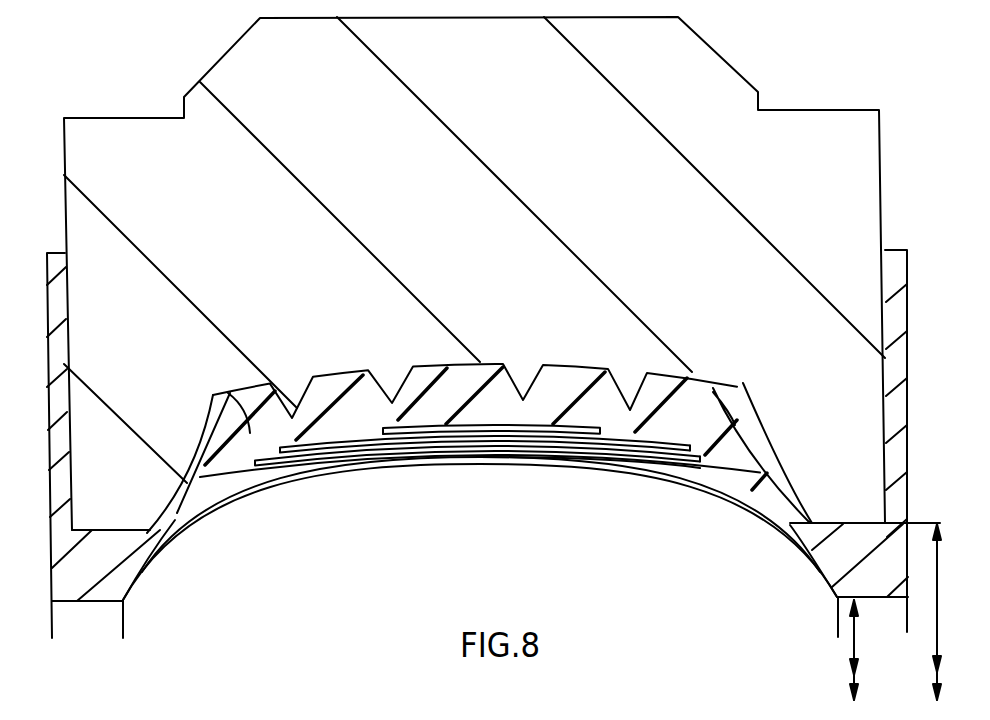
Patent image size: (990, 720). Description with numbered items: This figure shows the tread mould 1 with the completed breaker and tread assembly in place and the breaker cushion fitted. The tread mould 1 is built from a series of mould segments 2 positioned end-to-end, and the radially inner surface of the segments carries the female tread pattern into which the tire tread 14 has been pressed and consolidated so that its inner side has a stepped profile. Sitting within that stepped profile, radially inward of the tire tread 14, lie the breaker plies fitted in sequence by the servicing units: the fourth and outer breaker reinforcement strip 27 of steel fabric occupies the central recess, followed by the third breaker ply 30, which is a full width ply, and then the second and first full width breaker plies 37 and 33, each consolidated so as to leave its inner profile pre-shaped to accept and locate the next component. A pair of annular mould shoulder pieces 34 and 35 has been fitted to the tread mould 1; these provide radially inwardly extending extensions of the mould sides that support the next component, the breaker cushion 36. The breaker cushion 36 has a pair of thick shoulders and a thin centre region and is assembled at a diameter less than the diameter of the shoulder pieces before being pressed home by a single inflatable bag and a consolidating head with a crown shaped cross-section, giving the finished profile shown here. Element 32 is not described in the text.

The tread mould 1 is at (822, 282).
The mould segments 2 is at (147, 492).
The tire tread 14 is at (688, 435).
The fourth and outer breaker reinforcement strip 27 is at (432, 425).
The third breaker ply 30 is at (367, 433).
The lower plate 32 is at (513, 435).
The first full width breaker ply 33 is at (585, 450).
The annular mould shoulder piece 34 is at (123, 555).
The annular mould shoulder piece 35 is at (845, 566).
The breaker cushion 36 is at (247, 483).
The second full width breaker ply 37 is at (572, 455).